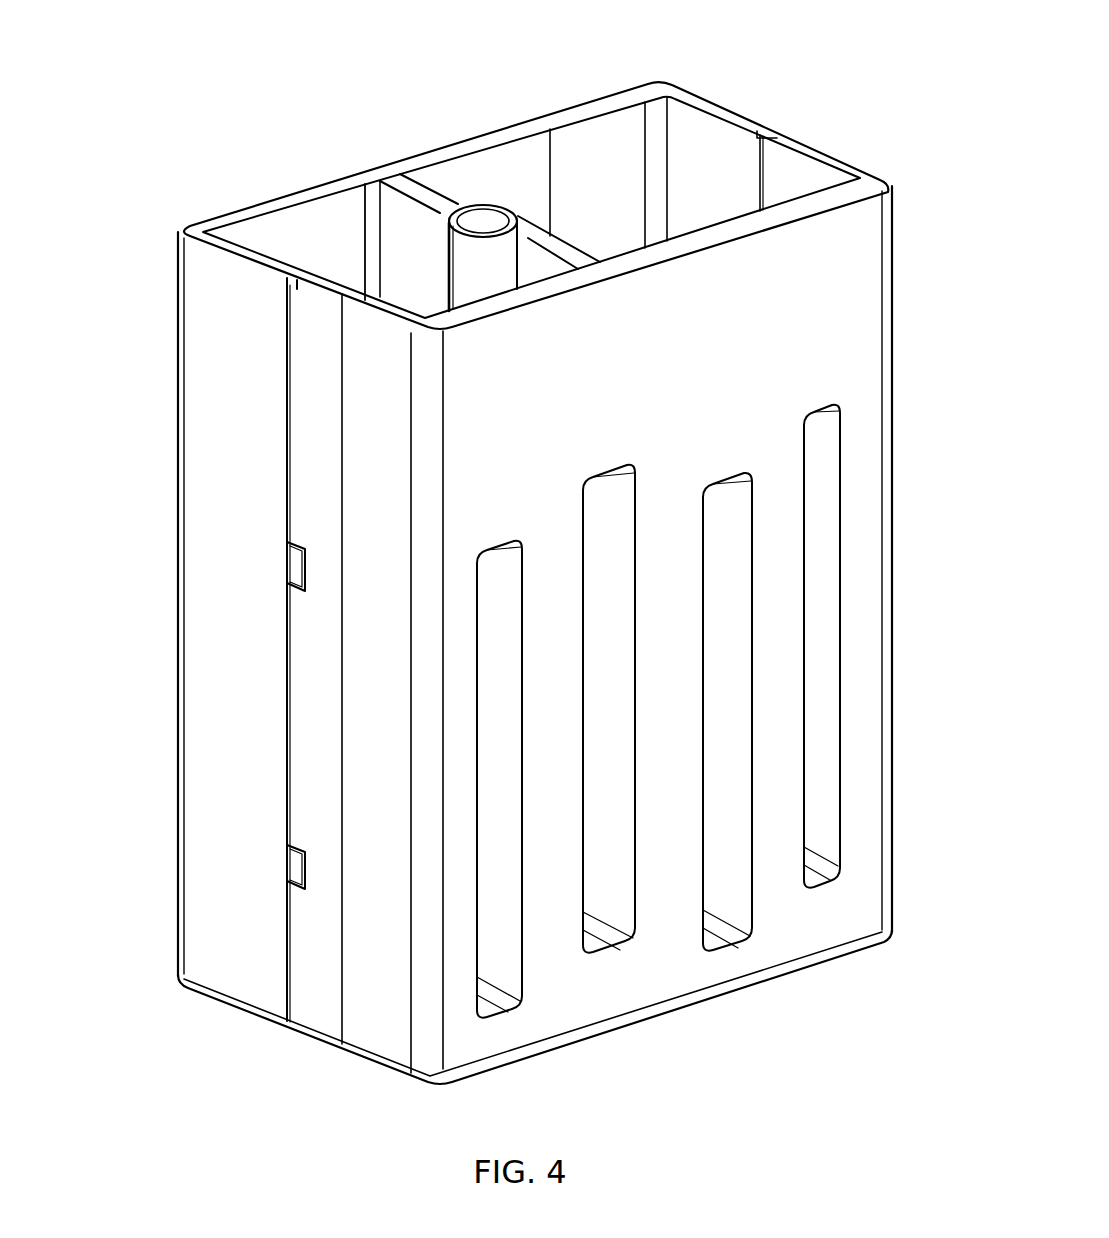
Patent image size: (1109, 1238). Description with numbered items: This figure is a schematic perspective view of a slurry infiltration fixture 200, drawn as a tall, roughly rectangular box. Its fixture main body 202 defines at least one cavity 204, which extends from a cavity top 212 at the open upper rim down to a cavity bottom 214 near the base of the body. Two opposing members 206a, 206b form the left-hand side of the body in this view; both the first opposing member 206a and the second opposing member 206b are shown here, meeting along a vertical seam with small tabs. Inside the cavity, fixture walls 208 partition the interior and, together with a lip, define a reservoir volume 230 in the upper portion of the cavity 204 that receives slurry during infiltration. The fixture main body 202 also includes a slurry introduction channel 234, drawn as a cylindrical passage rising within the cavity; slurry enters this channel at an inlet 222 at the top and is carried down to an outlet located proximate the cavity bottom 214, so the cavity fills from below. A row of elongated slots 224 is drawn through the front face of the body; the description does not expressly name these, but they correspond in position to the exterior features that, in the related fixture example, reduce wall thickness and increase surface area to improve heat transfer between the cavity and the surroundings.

The slurry infiltration fixture 200 is at (152, 92).
The fixture main body 202 is at (198, 318).
The cavity 204 is at (603, 188).
The first opposing member 206a is at (200, 380).
The second opposing member 206b is at (300, 523).
The fixture walls 208 is at (767, 166).
The cavity top 212 is at (806, 188).
The cavity bottom 214 is at (732, 739).
The inlet 222 is at (483, 218).
The vent slots 224 is at (494, 995).
The reservoir volume 230 is at (262, 244).
The slurry introduction channel 234 is at (438, 257).